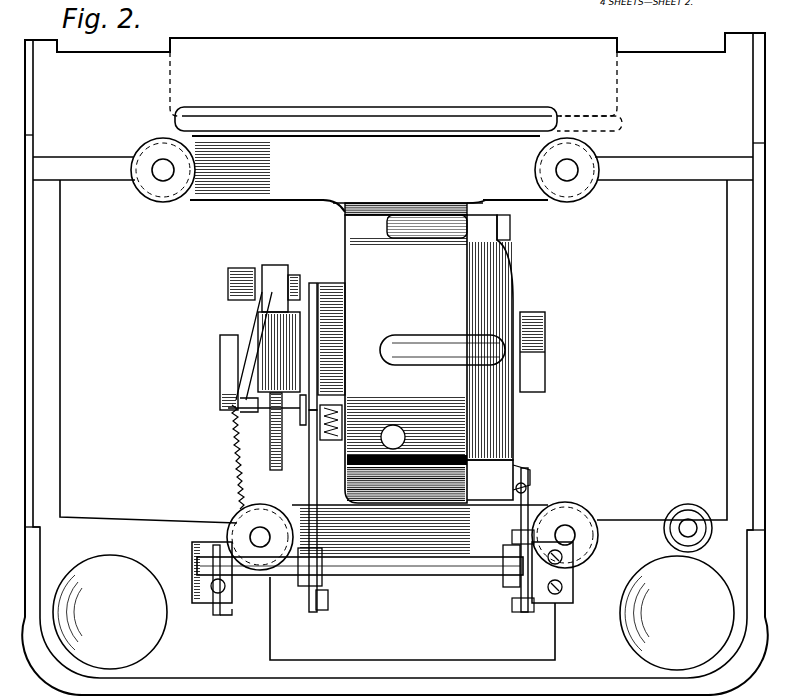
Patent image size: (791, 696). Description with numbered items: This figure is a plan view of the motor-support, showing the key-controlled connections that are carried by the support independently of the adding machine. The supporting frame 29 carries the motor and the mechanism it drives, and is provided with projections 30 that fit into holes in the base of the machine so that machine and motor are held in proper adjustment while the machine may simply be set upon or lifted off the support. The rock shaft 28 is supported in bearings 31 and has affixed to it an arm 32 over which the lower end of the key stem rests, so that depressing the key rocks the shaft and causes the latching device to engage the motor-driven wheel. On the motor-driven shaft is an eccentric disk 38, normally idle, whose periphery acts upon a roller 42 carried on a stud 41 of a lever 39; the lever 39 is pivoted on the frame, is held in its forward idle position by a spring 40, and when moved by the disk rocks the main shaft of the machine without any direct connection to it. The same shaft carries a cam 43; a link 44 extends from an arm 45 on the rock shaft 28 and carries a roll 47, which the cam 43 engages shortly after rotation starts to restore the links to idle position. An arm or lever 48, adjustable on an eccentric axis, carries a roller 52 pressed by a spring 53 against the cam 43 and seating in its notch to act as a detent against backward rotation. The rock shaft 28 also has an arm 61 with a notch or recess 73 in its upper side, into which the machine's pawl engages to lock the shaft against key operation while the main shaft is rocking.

The rock shaft 28 is at (425, 576).
The supporting frame 29 is at (622, 500).
The projections 30 is at (690, 520).
The bearings 31 is at (195, 556).
The arm 32 is at (218, 617).
The eccentric disk 38 is at (278, 470).
The lever 39 is at (226, 360).
The spring 40 is at (232, 440).
The stud 41 is at (228, 284).
The roller 42 is at (271, 270).
The cam 43 is at (251, 410).
The link 44 is at (318, 480).
The arm 45 is at (312, 612).
The roll 47 is at (304, 425).
The arm or lever 48 is at (318, 283).
The roller 52 is at (307, 303).
The spring 53 is at (342, 424).
The arm 61 is at (521, 512).
The notch or recess 73 is at (527, 488).